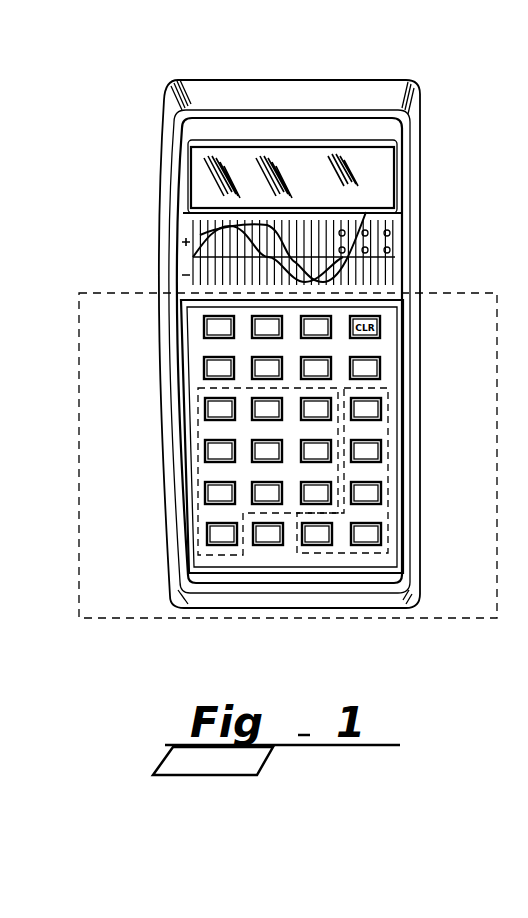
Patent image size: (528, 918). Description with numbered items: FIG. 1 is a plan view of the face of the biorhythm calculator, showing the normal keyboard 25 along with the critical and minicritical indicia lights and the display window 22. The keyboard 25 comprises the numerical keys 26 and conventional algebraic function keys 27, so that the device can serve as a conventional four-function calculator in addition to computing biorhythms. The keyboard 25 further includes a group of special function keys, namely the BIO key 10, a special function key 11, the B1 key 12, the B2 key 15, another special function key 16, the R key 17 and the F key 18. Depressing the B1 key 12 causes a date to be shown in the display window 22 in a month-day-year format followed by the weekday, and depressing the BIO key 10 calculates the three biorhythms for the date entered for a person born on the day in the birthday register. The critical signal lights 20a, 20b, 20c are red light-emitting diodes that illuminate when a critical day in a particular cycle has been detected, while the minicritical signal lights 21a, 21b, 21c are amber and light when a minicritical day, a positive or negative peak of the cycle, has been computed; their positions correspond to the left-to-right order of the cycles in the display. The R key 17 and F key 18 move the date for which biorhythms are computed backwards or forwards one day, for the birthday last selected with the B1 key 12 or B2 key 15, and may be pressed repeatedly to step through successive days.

The BIO key 10 is at (205, 328).
The special function key 11 is at (205, 370).
The B1 key 12 is at (327, 358).
The B2 key 15 is at (382, 367).
The special function key 16 is at (250, 376).
The R key 17 is at (250, 328).
The F key 18 is at (327, 315).
The critical signal light 20a is at (366, 212).
The critical signal light 20b is at (343, 232).
The critical signal light 20c is at (366, 232).
The minicritical signal light 21a is at (377, 264).
The minicritical signal light 21b is at (345, 257).
The minicritical signal light 21c is at (389, 249).
The display window 22 is at (383, 158).
The keyboard 25 is at (465, 620).
The numerical keys 26 is at (198, 437).
The algebraic function keys 27 is at (388, 430).